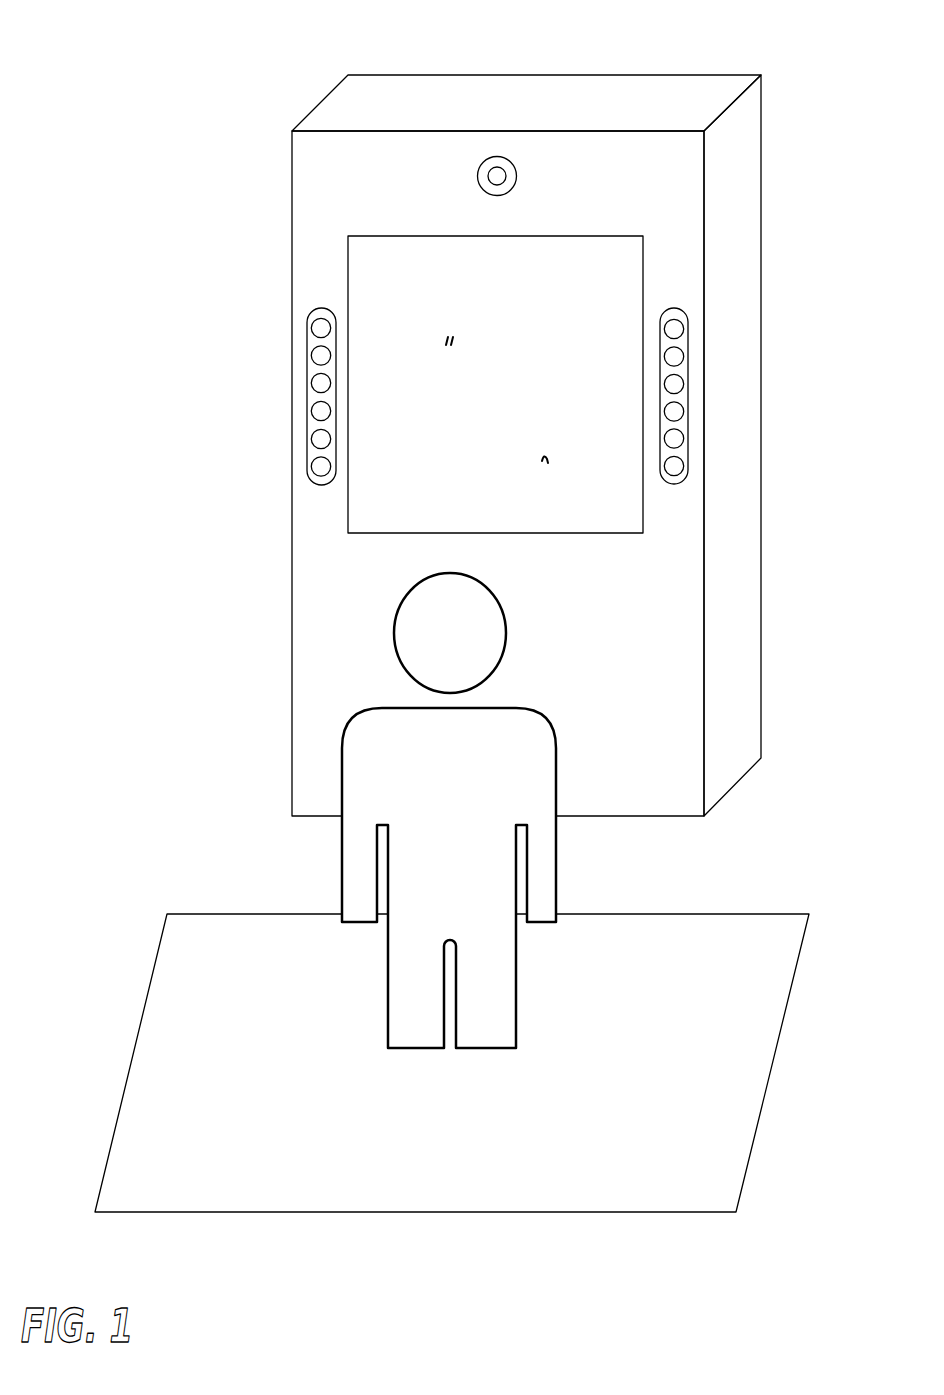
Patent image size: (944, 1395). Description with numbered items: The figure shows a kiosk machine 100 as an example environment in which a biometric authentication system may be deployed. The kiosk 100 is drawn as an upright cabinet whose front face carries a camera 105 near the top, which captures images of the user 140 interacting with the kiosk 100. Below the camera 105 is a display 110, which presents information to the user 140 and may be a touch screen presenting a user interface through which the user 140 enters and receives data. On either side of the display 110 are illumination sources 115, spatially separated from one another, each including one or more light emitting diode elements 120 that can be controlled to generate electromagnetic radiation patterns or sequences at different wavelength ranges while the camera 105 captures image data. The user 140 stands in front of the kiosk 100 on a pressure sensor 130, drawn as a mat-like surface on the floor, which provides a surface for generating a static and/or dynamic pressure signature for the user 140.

The kiosk machine 100 is at (243, 86).
The camera 105 is at (497, 176).
The display 110 is at (571, 263).
The illumination sources 115 is at (315, 343).
The light emitting diode (LED) element 120 is at (673, 433).
The pressure sensor 130 is at (748, 1057).
The user 140 is at (530, 763).